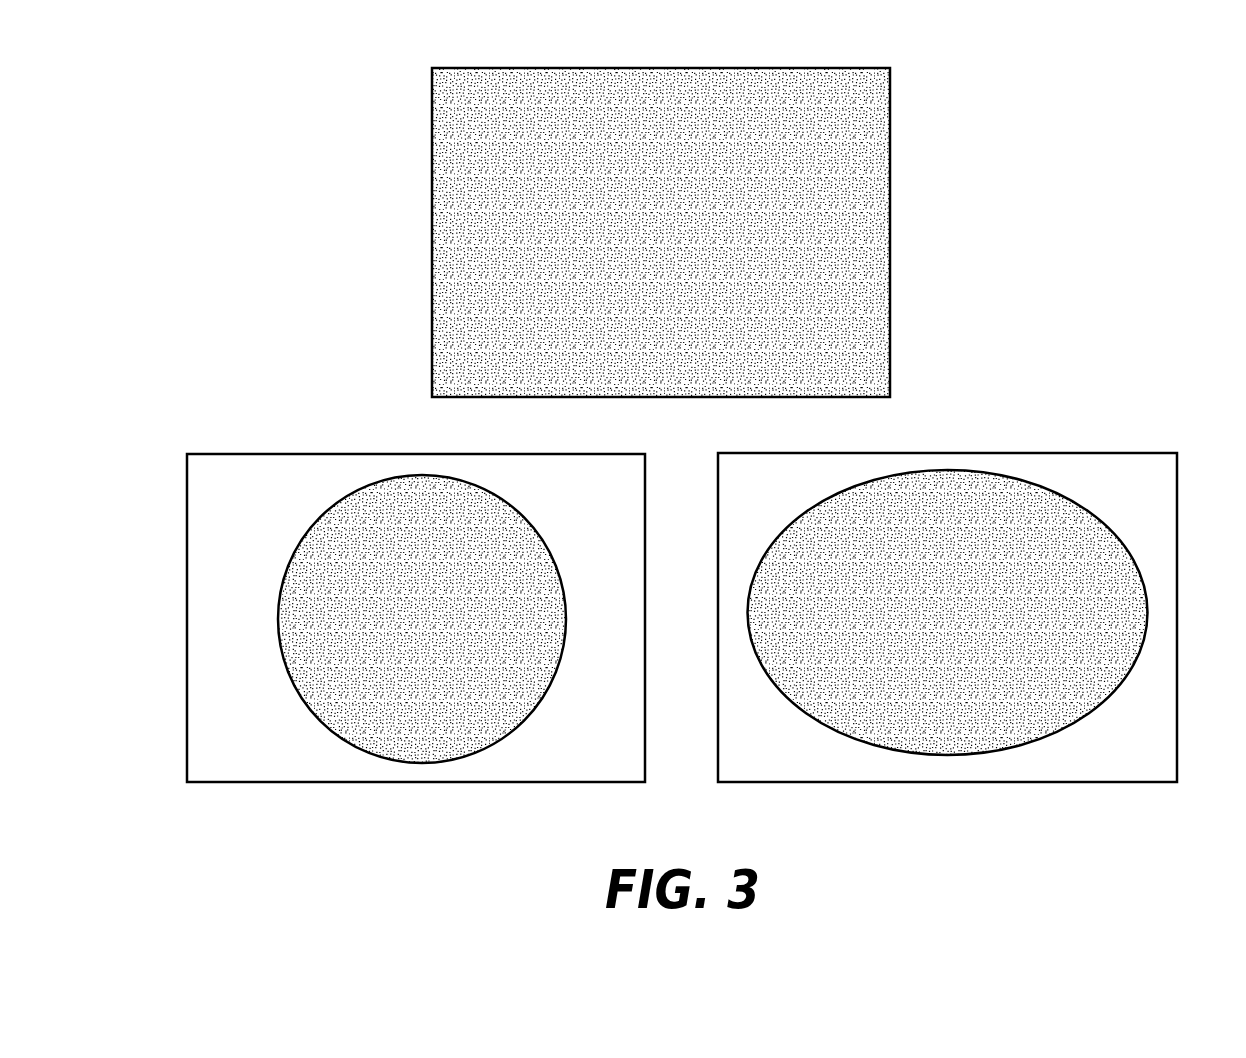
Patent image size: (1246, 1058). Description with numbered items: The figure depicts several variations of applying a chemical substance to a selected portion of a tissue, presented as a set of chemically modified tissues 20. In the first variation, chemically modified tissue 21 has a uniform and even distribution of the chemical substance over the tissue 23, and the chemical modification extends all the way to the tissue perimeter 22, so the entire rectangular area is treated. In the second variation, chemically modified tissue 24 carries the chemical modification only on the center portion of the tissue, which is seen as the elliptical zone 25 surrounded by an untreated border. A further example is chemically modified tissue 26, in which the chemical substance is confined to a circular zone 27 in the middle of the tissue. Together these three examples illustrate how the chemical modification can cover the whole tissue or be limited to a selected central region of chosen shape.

The chemically modified tissues 20 is at (1146, 159).
The chemically modified tissue 21 is at (951, 246).
The tissue perimeter 22 is at (890, 108).
The tissue 23 is at (665, 95).
The chemically modified tissue 24 is at (1068, 473).
The elliptical zone 25 is at (968, 487).
The chemically modified tissue 26 is at (260, 475).
The circular zone 27 is at (413, 490).